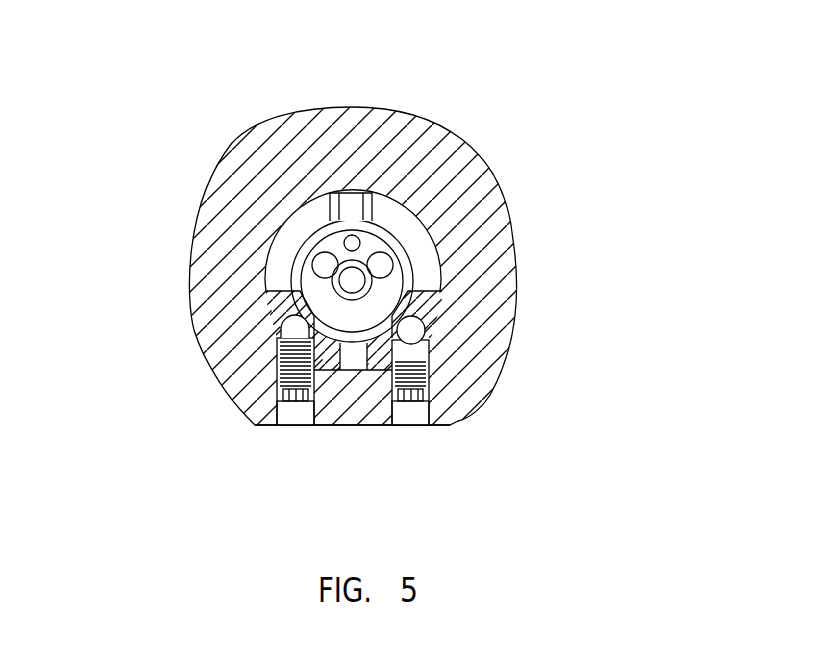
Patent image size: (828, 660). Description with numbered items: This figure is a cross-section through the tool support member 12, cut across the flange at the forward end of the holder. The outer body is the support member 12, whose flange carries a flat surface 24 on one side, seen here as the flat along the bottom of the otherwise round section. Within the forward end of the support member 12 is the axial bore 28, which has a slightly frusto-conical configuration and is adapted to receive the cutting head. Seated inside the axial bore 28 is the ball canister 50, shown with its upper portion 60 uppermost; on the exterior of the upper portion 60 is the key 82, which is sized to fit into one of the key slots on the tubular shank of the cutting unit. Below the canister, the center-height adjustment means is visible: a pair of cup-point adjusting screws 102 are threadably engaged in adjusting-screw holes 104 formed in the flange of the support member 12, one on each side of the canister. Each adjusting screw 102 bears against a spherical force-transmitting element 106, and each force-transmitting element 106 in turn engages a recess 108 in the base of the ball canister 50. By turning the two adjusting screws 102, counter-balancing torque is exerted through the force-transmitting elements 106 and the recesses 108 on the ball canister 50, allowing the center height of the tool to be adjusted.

The support member 12 is at (512, 357).
The flat surface 24 is at (373, 427).
The axial bore 28 is at (398, 217).
The ball canister 50 is at (268, 222).
The upper portion 60 is at (405, 235).
The key 82 is at (351, 194).
The cup-point adjusting screws 102 is at (279, 360).
The adjusting-screw holes 104 is at (295, 424).
The spherical force-transmitting element 106 is at (297, 322).
The recess 108 is at (285, 318).